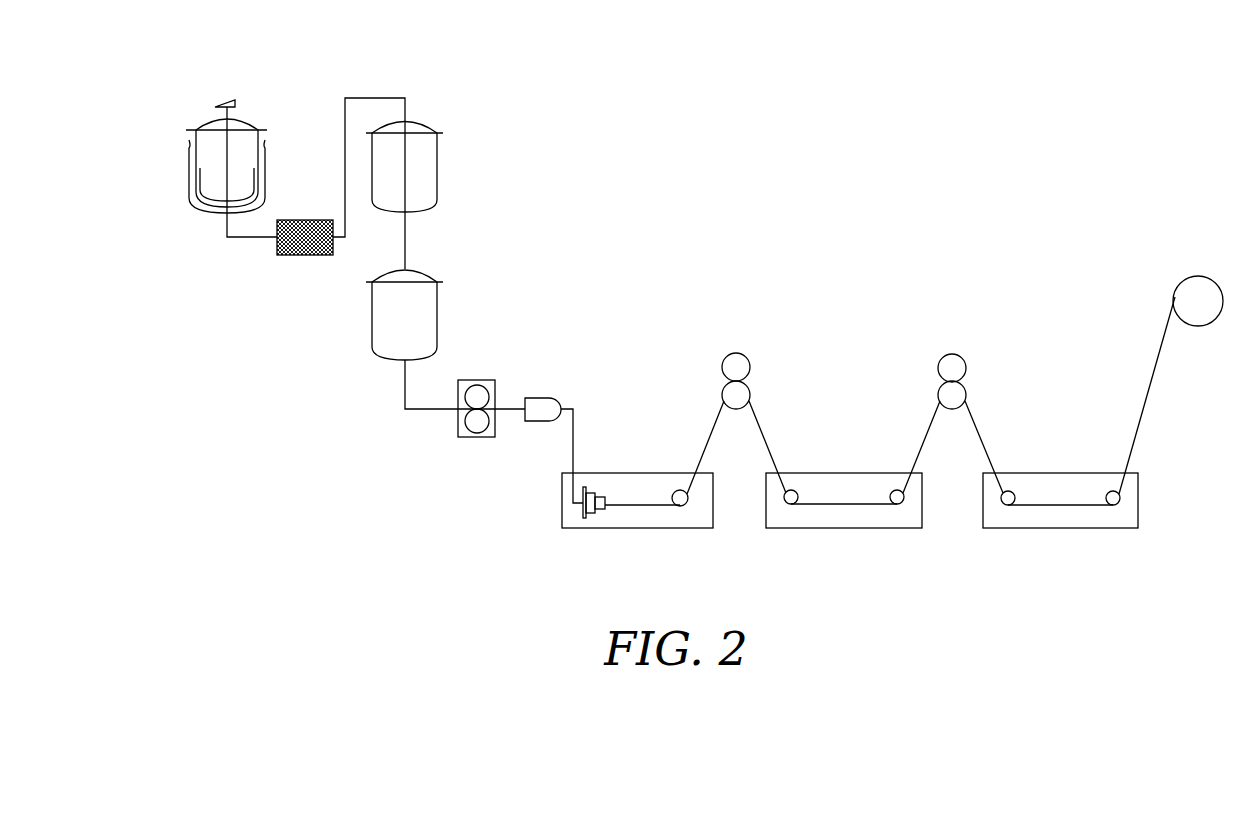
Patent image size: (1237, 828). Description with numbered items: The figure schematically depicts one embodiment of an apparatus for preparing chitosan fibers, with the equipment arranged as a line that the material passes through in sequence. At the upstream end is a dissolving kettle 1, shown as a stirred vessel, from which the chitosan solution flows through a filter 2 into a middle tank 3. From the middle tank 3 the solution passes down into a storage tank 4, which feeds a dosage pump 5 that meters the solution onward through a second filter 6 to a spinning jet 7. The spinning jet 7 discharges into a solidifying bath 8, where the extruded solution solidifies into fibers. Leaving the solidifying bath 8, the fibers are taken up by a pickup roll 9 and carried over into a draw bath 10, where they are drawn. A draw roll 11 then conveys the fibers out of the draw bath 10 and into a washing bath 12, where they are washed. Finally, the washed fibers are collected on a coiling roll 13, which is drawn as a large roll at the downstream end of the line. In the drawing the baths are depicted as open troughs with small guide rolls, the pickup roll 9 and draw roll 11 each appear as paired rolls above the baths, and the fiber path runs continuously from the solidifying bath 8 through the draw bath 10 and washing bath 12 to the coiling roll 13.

The dissolving kettle 1 is at (237, 156).
The filter 2 is at (305, 255).
The middle tank 3 is at (421, 167).
The storage tank 4 is at (420, 315).
The dosage pump 5 is at (476, 424).
The filter 6 is at (543, 392).
The spinning jet 7 is at (579, 456).
The solidifying bath 8 is at (637, 520).
The pickup roll 9 is at (736, 364).
The draw bath 10 is at (844, 519).
The draw roll 11 is at (951, 364).
The washing bath 12 is at (1060, 520).
The coiling roll 13 is at (1198, 282).